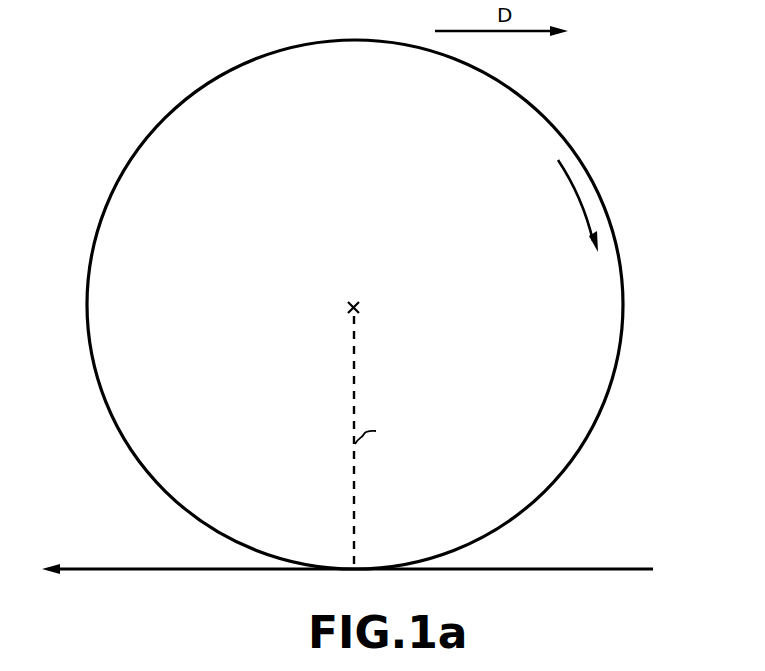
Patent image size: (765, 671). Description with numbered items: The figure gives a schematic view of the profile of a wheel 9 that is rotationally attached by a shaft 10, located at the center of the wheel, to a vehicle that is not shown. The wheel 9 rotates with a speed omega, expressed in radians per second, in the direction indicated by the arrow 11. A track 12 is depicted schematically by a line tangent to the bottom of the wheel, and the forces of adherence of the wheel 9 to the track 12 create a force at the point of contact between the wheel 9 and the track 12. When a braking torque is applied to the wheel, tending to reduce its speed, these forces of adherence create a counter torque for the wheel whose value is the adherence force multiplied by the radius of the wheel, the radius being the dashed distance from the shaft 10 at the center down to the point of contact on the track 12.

The wheel 9 is at (573, 459).
The shaft 10 is at (350, 302).
The arrow 11 is at (568, 206).
The track 12 is at (538, 568).